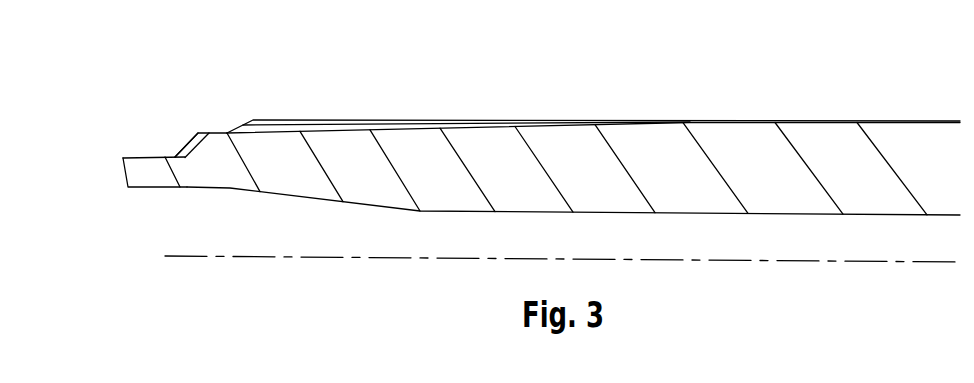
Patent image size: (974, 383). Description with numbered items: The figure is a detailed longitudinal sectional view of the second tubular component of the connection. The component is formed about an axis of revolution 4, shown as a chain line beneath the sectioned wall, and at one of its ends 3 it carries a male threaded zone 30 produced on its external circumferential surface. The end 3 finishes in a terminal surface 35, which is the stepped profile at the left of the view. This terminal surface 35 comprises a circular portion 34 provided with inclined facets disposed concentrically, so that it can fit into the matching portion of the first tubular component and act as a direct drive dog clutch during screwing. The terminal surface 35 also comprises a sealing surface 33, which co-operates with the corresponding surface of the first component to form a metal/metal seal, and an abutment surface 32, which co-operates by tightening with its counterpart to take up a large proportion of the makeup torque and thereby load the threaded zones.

The end of the second tubular component 3 is at (532, 190).
The male threaded zone 30 is at (385, 115).
The abutment surface 32 is at (126, 178).
The sealing surface 33 is at (125, 157).
The circular portion 34 is at (196, 133).
The terminal surface 35 is at (158, 125).
The axis of revolution 4 is at (257, 258).